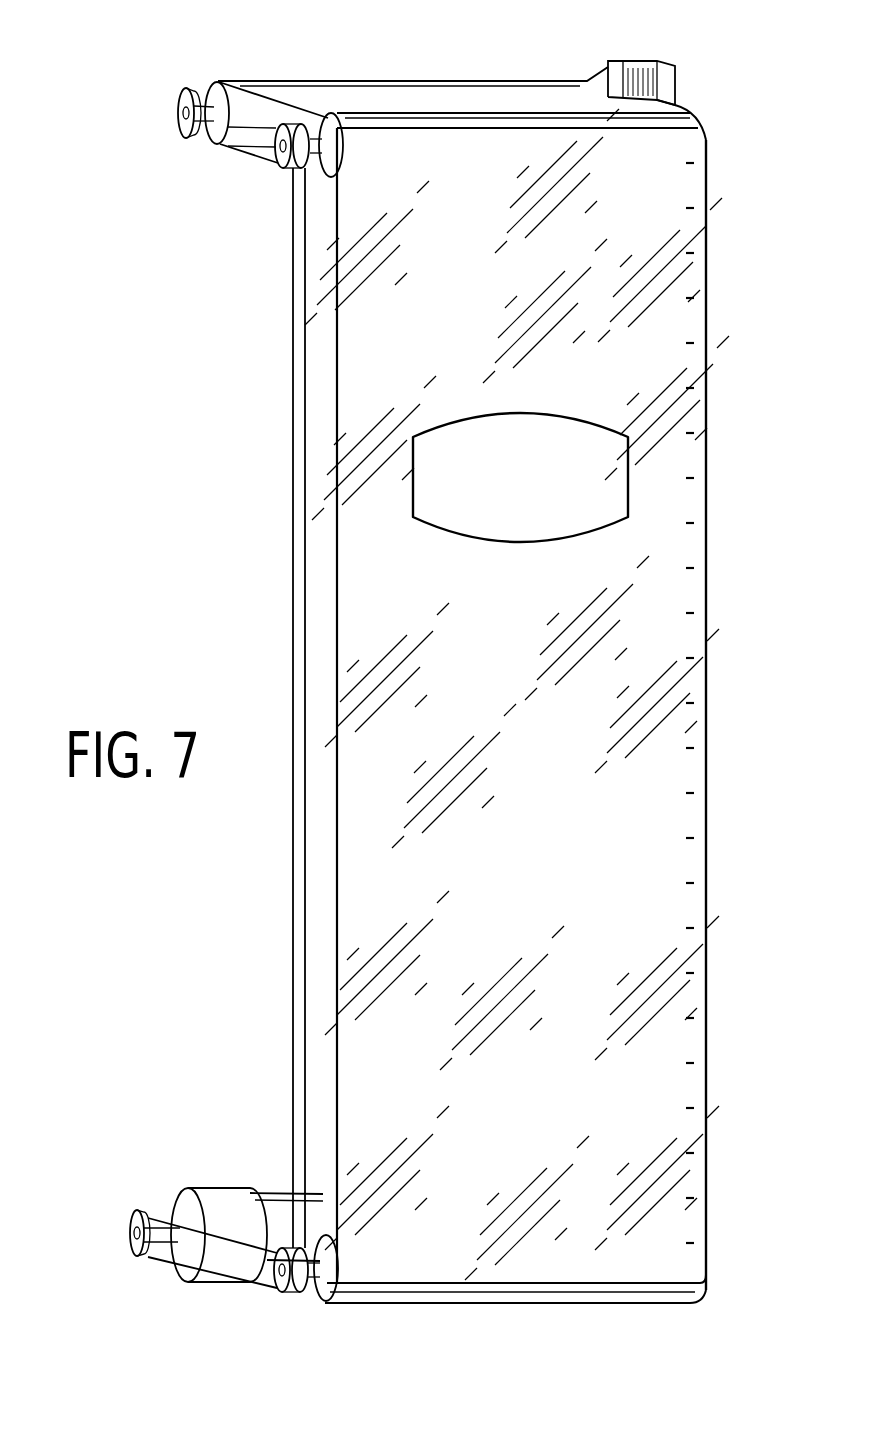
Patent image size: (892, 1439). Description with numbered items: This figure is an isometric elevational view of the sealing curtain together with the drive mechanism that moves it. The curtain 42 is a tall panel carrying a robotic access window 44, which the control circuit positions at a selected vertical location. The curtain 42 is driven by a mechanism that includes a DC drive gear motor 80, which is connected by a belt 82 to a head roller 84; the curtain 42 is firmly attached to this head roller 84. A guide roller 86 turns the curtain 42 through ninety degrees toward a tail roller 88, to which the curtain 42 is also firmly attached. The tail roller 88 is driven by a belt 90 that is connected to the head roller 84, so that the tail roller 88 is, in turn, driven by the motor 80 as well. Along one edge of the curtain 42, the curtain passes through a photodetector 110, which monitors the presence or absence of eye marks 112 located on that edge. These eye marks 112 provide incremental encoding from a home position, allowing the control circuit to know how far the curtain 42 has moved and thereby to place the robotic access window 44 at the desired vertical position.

The curtain 42 is at (650, 755).
The robotic access window 44 is at (598, 487).
The DC drive gear motor 80 is at (218, 1205).
The belt 82 is at (258, 1288).
The head roller 84 is at (320, 1300).
The guide roller 86 is at (330, 123).
The tail roller 88 is at (212, 92).
The belt 90 is at (292, 1025).
The photodetector 110 is at (667, 83).
The eye marks 112 is at (685, 207).